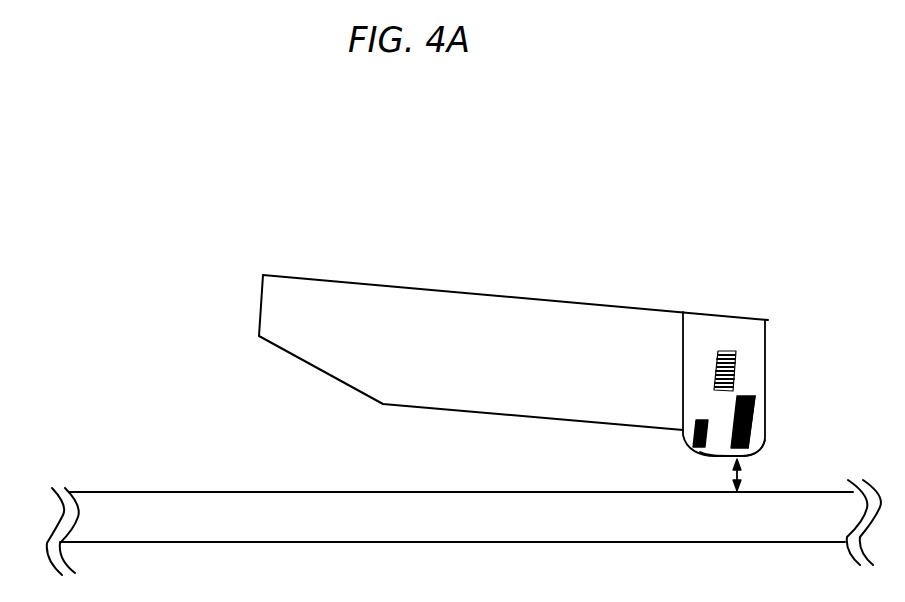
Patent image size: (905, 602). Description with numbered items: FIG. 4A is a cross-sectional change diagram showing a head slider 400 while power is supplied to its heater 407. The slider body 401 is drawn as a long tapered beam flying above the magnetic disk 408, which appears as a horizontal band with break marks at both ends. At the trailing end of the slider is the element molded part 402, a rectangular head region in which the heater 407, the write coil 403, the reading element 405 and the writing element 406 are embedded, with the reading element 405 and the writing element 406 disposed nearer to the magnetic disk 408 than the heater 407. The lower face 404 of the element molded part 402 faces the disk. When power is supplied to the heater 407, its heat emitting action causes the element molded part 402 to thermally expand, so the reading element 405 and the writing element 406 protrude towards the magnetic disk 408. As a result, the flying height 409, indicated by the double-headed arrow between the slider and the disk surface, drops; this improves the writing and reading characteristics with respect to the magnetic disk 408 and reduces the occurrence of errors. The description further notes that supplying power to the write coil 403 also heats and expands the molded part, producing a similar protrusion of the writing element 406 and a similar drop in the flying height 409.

The head gimbal assembly / suspension 400 is at (259, 318).
The load beam 401 is at (507, 315).
The element molded part 402 is at (750, 330).
The write coil 403 is at (753, 393).
The air bearing surface 404 is at (762, 440).
The reading element 405 is at (693, 438).
The writing element 406 is at (753, 410).
The heater 407 is at (720, 350).
The magnetic disk 408 is at (257, 493).
The flying height 409 is at (757, 475).